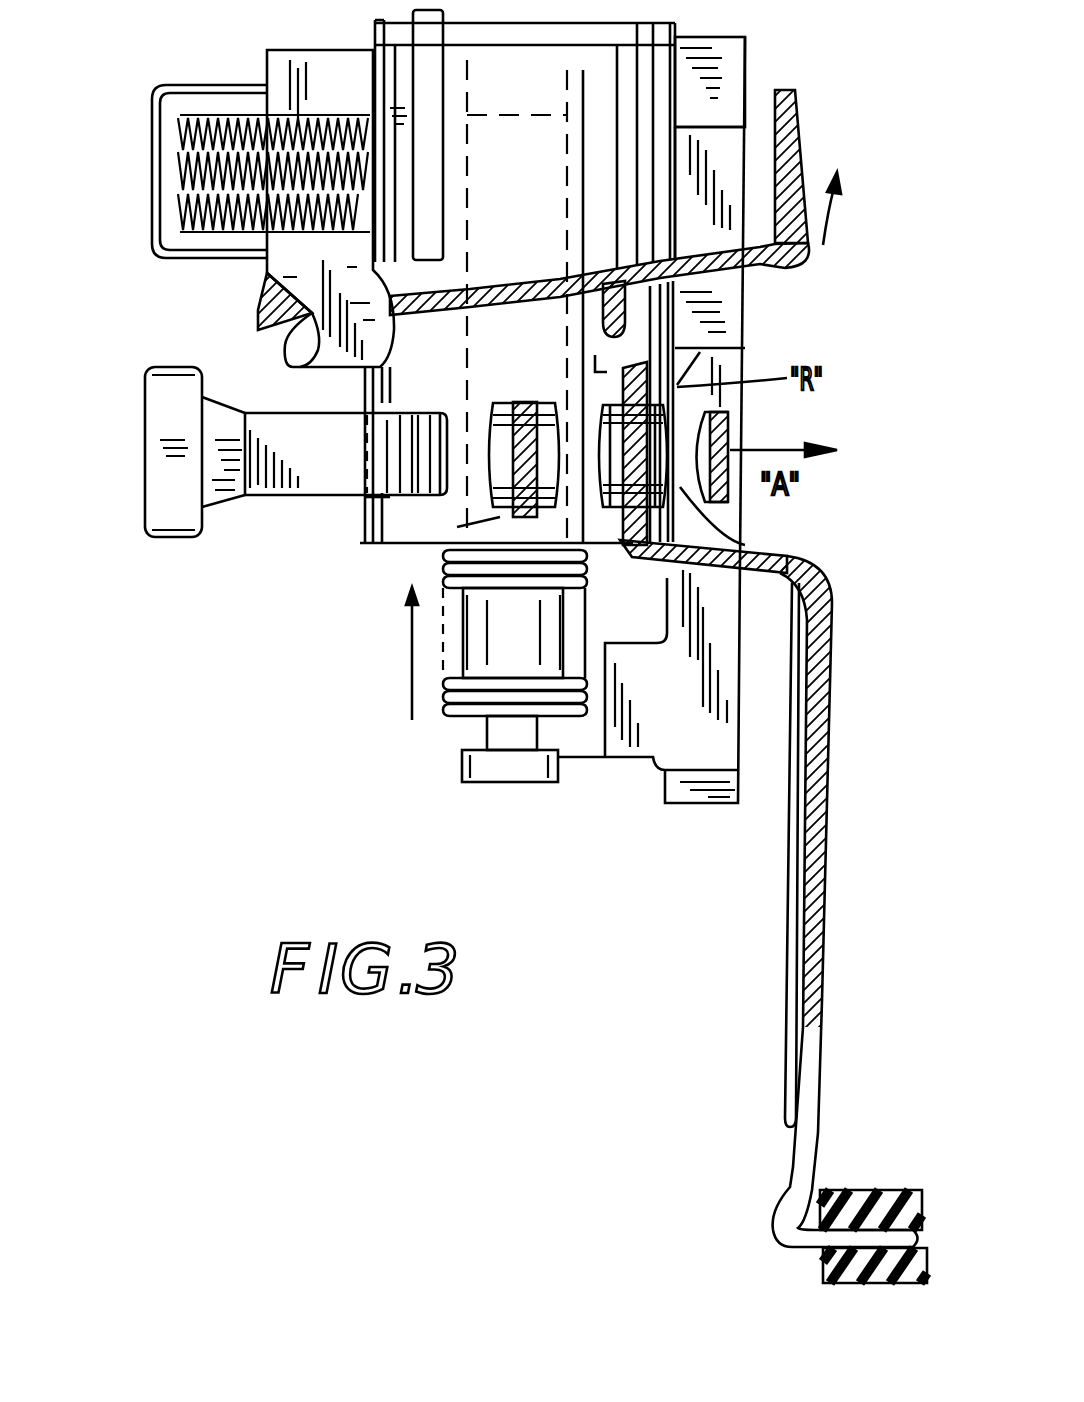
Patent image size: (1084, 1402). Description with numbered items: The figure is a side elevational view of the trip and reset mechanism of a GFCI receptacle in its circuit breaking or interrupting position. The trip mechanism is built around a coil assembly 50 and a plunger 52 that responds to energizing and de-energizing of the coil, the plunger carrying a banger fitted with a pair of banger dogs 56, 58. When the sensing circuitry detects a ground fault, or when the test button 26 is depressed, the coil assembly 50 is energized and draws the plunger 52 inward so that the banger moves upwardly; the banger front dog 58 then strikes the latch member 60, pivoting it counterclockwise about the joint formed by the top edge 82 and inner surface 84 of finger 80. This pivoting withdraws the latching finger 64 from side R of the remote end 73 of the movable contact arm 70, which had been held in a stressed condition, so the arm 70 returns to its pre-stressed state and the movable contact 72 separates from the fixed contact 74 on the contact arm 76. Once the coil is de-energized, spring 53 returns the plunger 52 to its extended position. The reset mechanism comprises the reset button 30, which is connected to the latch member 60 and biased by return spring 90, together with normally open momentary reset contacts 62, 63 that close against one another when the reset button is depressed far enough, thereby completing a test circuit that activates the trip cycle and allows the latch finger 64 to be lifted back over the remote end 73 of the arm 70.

The test button 26 is at (130, 412).
The reset button 30 is at (140, 116).
The coil assembly 50 is at (525, 92).
The plunger 52 is at (583, 620).
The spring 53 is at (438, 703).
The banger dog 56 is at (727, 70).
The banger front dog 58 is at (725, 300).
The latch member 60 is at (795, 138).
The reset contact 62 is at (740, 543).
The reset contact 63 is at (737, 490).
The latching finger 64 is at (575, 278).
The movable contact arm 70 is at (850, 835).
The movable contact 72 is at (607, 463).
The remote end 73 is at (700, 352).
The fixed contact 74 is at (553, 417).
The contact arm 76 is at (457, 527).
The finger 80 is at (330, 377).
The top edge 82 is at (283, 337).
The inner surface 84 is at (290, 363).
The return spring 90 is at (165, 198).